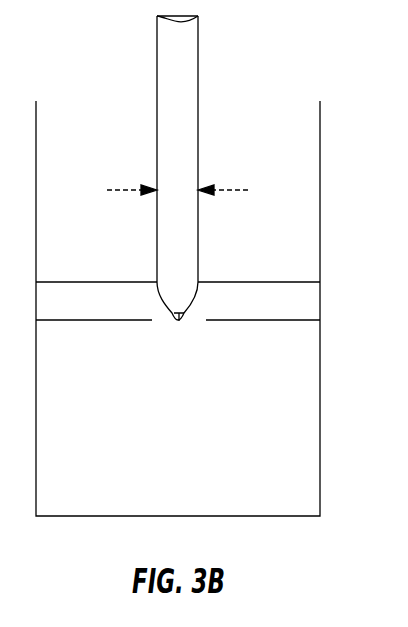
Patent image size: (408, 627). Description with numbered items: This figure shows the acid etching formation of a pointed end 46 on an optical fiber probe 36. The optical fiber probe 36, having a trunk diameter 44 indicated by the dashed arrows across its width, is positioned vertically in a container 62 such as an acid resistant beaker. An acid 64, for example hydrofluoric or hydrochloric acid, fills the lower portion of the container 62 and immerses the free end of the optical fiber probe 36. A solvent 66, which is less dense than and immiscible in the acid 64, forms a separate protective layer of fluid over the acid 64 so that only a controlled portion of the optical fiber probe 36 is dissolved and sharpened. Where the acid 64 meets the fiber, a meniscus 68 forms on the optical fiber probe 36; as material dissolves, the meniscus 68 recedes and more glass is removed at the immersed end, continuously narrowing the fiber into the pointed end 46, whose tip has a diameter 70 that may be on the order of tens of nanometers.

The optical fiber probe 36 is at (198, 83).
The trunk diameter 44 is at (238, 190).
The pointed end 46 is at (181, 345).
The container 62 is at (320, 196).
The acid 64 is at (312, 437).
The solvent 66 is at (312, 305).
The meniscus 68 is at (165, 306).
The diameter 70 is at (184, 314).